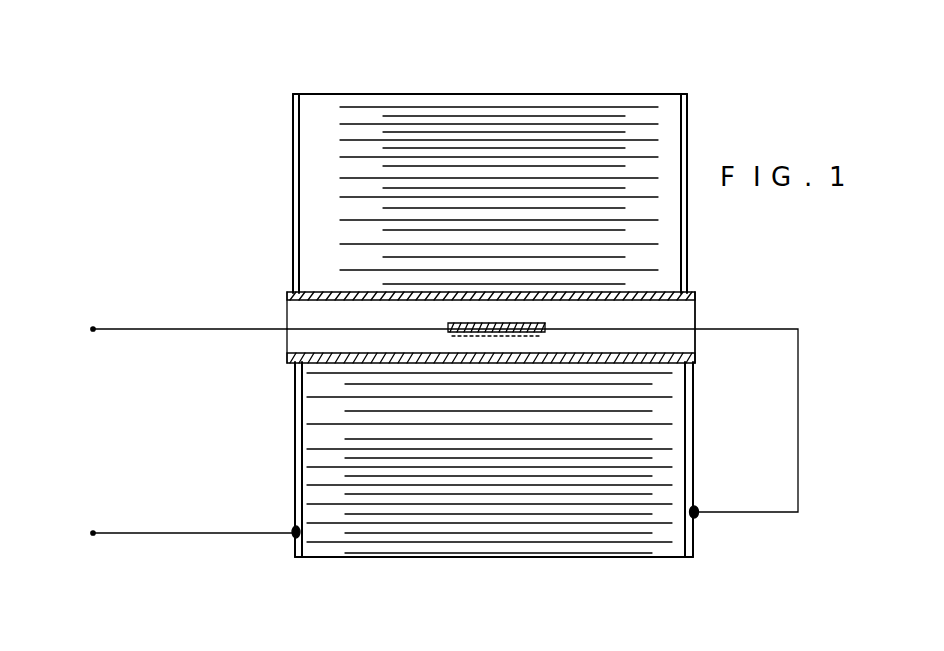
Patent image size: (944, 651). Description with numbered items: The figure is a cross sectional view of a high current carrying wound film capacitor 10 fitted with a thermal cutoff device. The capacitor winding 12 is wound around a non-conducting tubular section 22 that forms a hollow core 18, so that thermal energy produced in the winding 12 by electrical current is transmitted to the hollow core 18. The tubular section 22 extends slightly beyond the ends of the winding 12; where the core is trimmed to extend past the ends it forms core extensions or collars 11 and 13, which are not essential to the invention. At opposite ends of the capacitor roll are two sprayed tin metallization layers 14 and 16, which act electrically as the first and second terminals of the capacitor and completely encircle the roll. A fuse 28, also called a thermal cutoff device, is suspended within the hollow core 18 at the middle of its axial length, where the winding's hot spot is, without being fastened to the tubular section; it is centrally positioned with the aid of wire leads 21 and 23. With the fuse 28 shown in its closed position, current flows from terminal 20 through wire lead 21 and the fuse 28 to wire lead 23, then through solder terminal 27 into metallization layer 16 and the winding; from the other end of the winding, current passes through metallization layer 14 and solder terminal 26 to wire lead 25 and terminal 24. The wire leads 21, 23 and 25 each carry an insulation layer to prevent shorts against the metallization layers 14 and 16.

The capacitor 10 is at (180, 122).
The core extension 11 is at (285, 345).
The capacitor winding 12 is at (372, 123).
The core extension 13 is at (695, 340).
The metallization layer 14 is at (293, 138).
The metallization layer 16 is at (686, 132).
The hollow core 18 is at (695, 317).
The terminal 20 is at (87, 318).
The wire lead 21 is at (163, 330).
The tubular section 22 is at (287, 297).
The wire lead 23 is at (798, 382).
The terminal 24 is at (87, 522).
The wire lead 25 is at (203, 532).
The solder terminal 26 is at (287, 542).
The solder terminal 27 is at (700, 517).
The fuse 28 is at (450, 322).